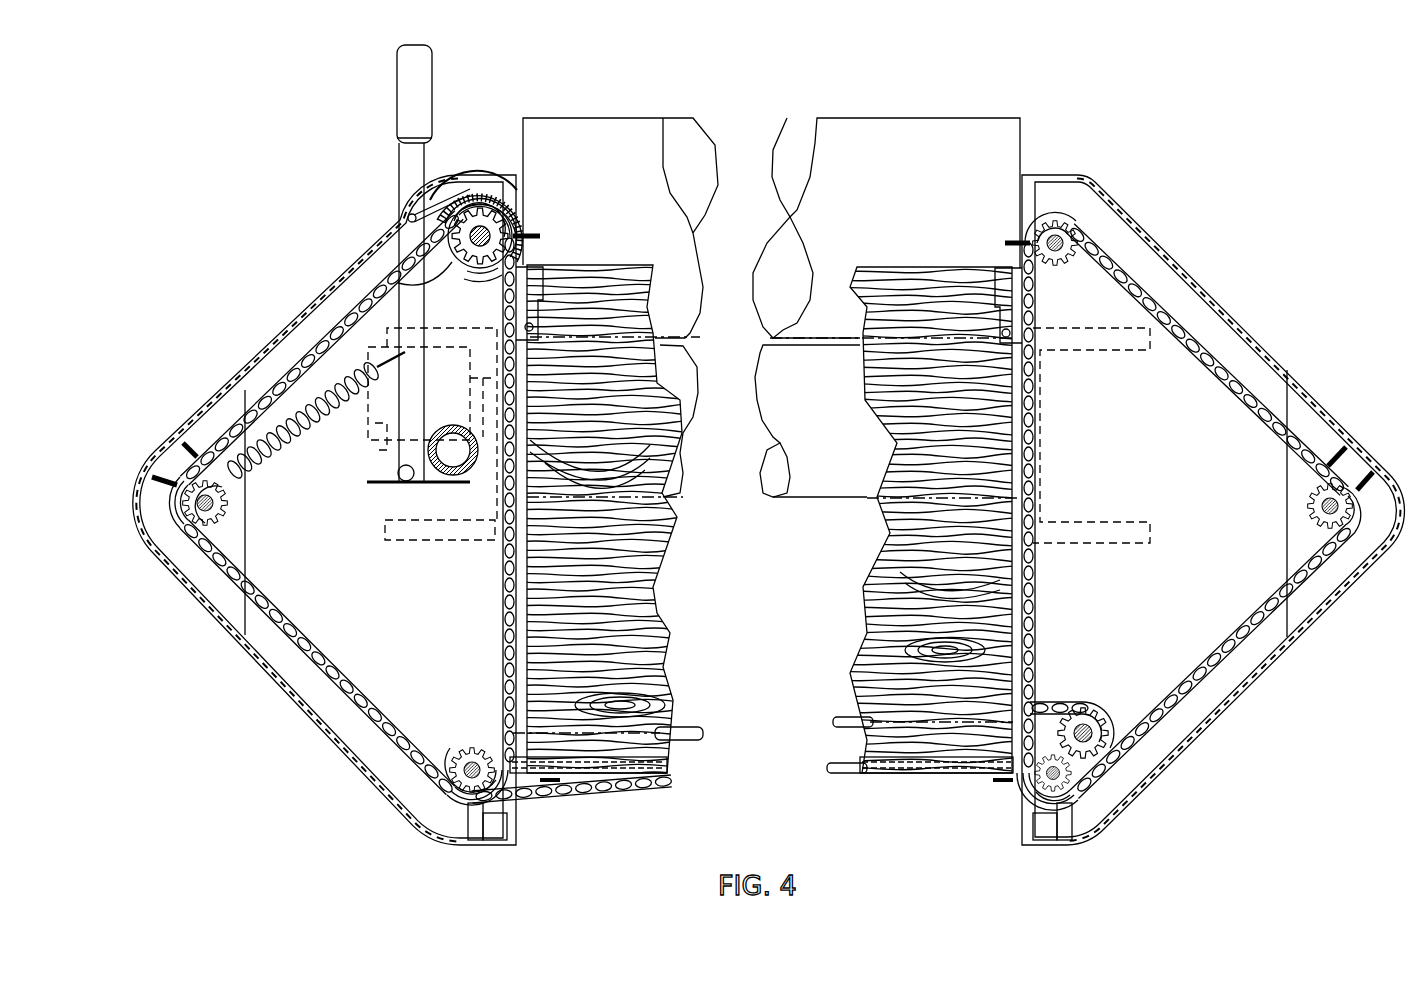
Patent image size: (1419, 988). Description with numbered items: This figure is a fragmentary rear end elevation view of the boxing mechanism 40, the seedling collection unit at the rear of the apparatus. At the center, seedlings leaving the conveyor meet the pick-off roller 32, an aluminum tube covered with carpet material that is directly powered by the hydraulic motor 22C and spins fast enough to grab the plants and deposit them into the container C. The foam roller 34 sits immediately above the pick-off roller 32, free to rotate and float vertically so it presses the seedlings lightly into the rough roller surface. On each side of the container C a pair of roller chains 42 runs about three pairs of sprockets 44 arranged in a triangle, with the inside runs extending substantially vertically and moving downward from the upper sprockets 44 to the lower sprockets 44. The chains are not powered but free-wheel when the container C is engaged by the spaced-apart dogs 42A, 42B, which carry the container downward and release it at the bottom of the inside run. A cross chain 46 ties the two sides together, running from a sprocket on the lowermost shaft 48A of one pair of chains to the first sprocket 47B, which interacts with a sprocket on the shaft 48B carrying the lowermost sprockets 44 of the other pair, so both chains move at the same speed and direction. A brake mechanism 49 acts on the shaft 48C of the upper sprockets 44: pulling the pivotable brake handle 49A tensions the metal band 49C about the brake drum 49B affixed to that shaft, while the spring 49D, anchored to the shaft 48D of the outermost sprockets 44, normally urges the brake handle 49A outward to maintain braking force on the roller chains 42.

The boxing mechanism 40 is at (1215, 117).
The roller chains 42 is at (333, 660).
The dog 42A is at (545, 232).
The dog 42B is at (530, 265).
The sprockets 44 is at (481, 228).
The cross chain 46 is at (655, 790).
The first sprocket 47B is at (1085, 728).
The lowermost shaft 48A is at (460, 748).
The shaft 48B is at (1035, 795).
The shaft 48C is at (528, 228).
The shaft 48D is at (245, 505).
The brake mechanism 49 is at (333, 275).
The brake handle 49A is at (397, 95).
The brake drum 49B is at (400, 270).
The metal band 49C is at (520, 205).
The spring 49D is at (285, 472).
The hydraulic motor 22C is at (465, 414).
The pick-off roller 32 is at (817, 424).
The foam roller 34 is at (880, 194).
The container C is at (615, 551).